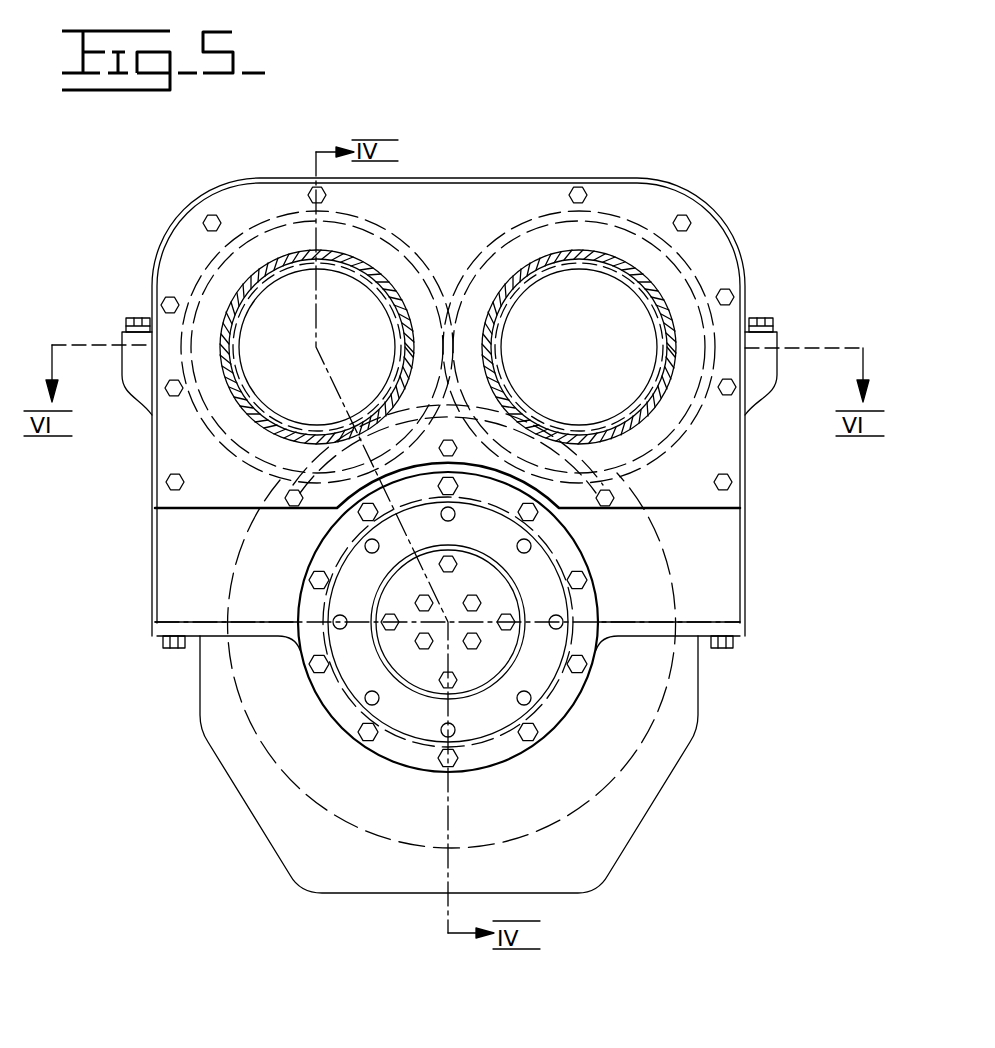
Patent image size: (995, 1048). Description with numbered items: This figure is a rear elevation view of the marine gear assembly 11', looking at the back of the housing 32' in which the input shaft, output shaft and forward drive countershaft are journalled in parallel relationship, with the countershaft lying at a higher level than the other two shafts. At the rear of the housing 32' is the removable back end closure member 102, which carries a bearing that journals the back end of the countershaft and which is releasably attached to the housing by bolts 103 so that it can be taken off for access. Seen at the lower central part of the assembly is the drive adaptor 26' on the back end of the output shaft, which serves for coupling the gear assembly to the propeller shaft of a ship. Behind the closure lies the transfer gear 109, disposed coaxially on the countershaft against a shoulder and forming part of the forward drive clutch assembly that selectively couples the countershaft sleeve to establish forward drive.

The marine gear assembly 11' is at (512, 528).
The drive adaptor 26' is at (403, 673).
The housing 32' is at (487, 618).
The removable back end closure member 102 is at (463, 228).
The bolts 103 is at (579, 187).
The transfer gear 109 is at (680, 258).